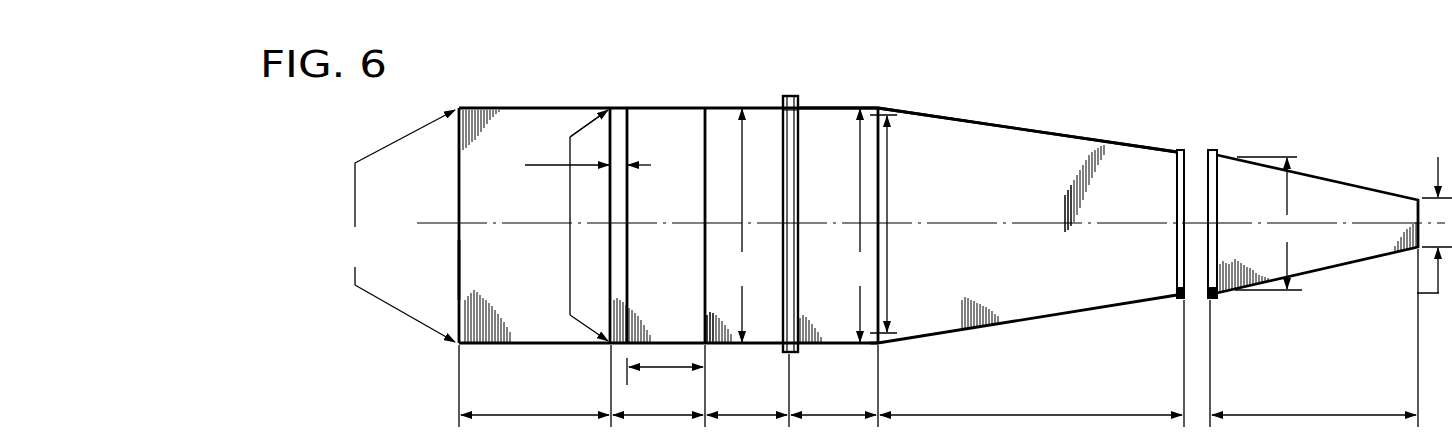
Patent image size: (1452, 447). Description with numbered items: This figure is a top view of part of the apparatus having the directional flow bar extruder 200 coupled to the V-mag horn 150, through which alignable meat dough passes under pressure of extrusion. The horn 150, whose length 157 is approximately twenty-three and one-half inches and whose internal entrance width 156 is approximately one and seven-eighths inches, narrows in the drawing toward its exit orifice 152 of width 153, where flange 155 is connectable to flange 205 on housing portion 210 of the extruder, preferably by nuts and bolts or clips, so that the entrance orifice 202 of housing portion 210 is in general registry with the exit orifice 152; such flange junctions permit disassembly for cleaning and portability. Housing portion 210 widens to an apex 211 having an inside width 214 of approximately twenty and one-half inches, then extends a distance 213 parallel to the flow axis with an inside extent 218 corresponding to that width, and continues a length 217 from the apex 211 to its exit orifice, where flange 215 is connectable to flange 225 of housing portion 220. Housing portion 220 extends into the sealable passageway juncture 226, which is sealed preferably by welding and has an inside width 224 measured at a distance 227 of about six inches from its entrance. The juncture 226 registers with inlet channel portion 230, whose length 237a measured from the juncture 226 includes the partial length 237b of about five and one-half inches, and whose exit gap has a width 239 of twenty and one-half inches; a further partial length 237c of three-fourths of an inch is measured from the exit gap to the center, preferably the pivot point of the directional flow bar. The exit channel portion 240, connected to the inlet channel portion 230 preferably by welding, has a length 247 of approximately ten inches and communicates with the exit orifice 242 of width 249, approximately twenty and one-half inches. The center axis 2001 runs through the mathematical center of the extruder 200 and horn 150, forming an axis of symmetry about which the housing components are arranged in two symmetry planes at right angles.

The directional flow bar extruder 200 is at (495, 103).
The exit channel portion 240 is at (553, 118).
The width 239 is at (570, 196).
The partial length 237c is at (613, 163).
The width 249 is at (395, 226).
The exit orifice 242 is at (456, 256).
The inlet channel portion 230 is at (683, 279).
The width 224 is at (743, 225).
The housing portion 220 is at (763, 120).
The flange 225 is at (786, 127).
The flange 215 is at (803, 130).
The distance 218 is at (850, 225).
The width 214 is at (890, 190).
The housing portion 210 is at (960, 133).
The center axis 2001 is at (1035, 220).
The flange 205 is at (1180, 150).
The flange 155 is at (1213, 150).
The V-mag horn 150 is at (1373, 163).
The width 153 is at (1269, 223).
The internal entrance width 156 is at (1413, 233).
The entrance orifice 202 is at (1193, 275).
The exit orifice 152 is at (1208, 300).
The sealable passageway juncture 226 is at (718, 326).
The apex 211 is at (878, 330).
The length 247 is at (535, 417).
The length 237a is at (658, 417).
The partial length 237b is at (665, 368).
The distance 227 is at (747, 417).
The length 217 is at (833, 417).
The distance 213 is at (1031, 417).
The length 157 is at (1314, 417).